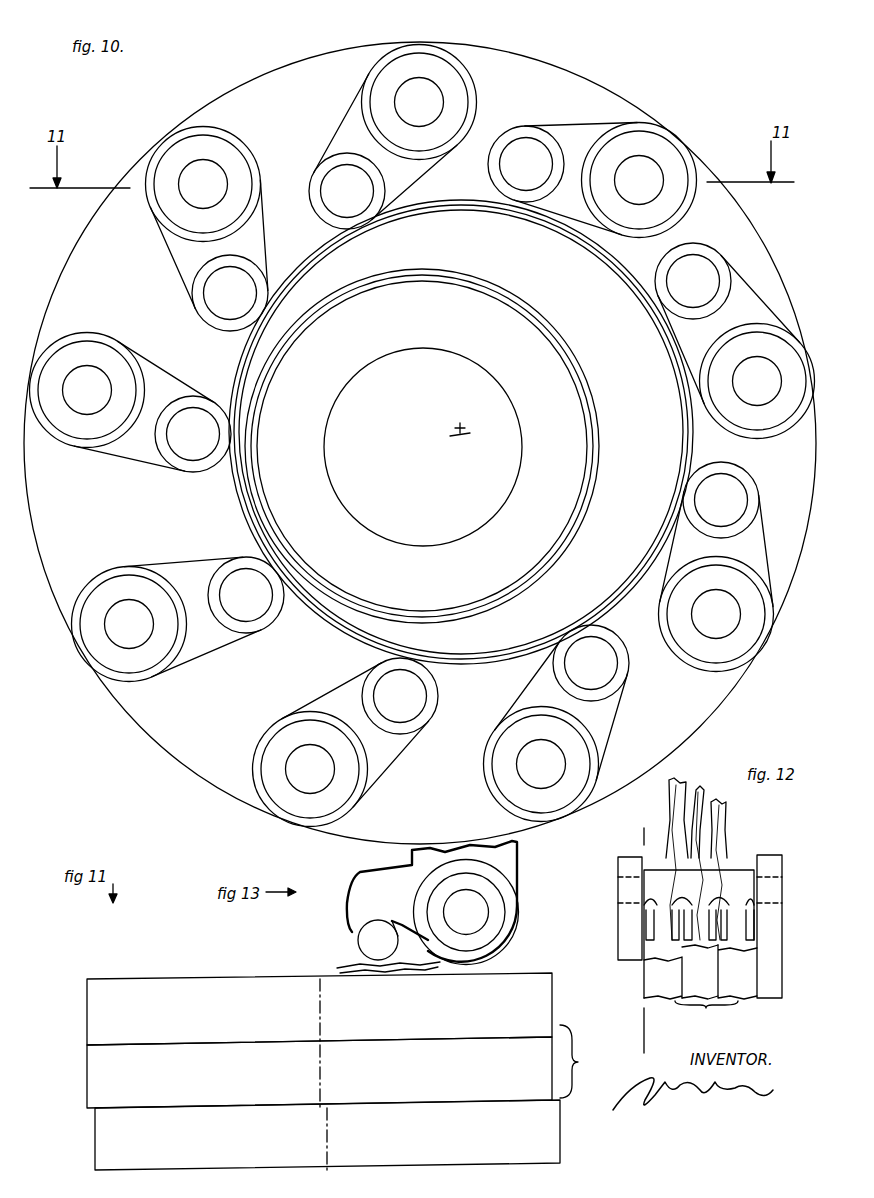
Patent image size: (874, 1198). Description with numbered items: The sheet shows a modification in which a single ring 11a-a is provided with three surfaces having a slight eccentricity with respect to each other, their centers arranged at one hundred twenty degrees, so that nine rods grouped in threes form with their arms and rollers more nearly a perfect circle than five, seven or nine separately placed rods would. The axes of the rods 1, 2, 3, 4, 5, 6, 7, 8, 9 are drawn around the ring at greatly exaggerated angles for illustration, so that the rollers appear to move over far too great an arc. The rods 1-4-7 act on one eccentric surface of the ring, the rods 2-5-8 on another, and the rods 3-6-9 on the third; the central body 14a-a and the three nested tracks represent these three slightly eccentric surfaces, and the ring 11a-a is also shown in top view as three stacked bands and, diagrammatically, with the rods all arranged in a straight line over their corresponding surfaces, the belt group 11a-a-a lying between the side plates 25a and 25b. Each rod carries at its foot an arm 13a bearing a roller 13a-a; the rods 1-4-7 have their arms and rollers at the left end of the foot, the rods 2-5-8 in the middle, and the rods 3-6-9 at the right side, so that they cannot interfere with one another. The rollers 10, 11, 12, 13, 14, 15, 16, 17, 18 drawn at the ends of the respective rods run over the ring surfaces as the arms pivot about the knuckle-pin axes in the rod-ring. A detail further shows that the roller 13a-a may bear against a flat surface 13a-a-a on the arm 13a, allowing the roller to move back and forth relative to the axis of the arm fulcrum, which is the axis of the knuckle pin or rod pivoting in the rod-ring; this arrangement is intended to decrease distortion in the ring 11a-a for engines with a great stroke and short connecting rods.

In FIG. 10, the rod 1 is at (419, 100).
In FIG. 13, the rod 1 is at (507, 855).
In FIG. 10, the rod 2 is at (639, 180).
In FIG. 10, the rod 3 is at (757, 381).
In FIG. 10, the rod 4 is at (716, 614).
In FIG. 10, the rod 5 is at (541, 764).
In FIG. 10, the rod 6 is at (310, 769).
In FIG. 10, the rod 7 is at (129, 624).
In FIG. 10, the rod 8 is at (85, 392).
In FIG. 10, the rod 9 is at (103, 118).
In FIG. 10, the roller 10 is at (458, 95).
In FIG. 13, the roller 10 is at (497, 910).
In FIG. 12, the roller 10 is at (641, 1022).
In FIG. 10, the roller 11 is at (674, 197).
In FIG. 10, the roller 12 is at (752, 335).
In FIG. 10, the roller 13 is at (751, 595).
In FIG. 10, the roller 14 is at (576, 762).
In FIG. 10, the roller 15 is at (338, 798).
In FIG. 10, the roller 16 is at (137, 662).
In FIG. 10, the roller 17 is at (100, 358).
In FIG. 10, the roller 18 is at (217, 153).
In FIG. 10, the arm 13a is at (358, 118).
In FIG. 13, the arm 13a is at (383, 873).
In FIG. 12, the arm 13a is at (752, 906).
In FIG. 10, the roller 13a-a is at (704, 246).
In FIG. 13, the roller 13a-a is at (360, 938).
In FIG. 12, the roller 13a-a is at (752, 928).
In FIG. 13, the flat surface 13a-a-a is at (363, 928).
In FIG. 10, the central disc 14a-a is at (382, 349).
In FIG. 10, the rods 1-4-7 is at (318, 615).
In FIG. 11, the rods 1-4-7 is at (319, 1009).
In FIG. 12, the rods 1-4-7 is at (674, 817).
In FIG. 10, the rods 2-5-8 is at (465, 198).
In FIG. 11, the rods 2-5-8 is at (319, 1072).
In FIG. 12, the rods 2-5-8 is at (700, 788).
In FIG. 10, the rods 3-6-9 is at (700, 452).
In FIG. 11, the rods 3-6-9 is at (327, 1135).
In FIG. 12, the rods 3-6-9 is at (720, 815).
In FIG. 13, the ring 11a-a is at (373, 959).
In FIG. 11, the ring 11a-a is at (592, 1061).
In FIG. 12, the belt group 11a-a-a is at (707, 1012).
In FIG. 12, the side plate 25a is at (767, 858).
In FIG. 12, the side plate 25b is at (618, 870).